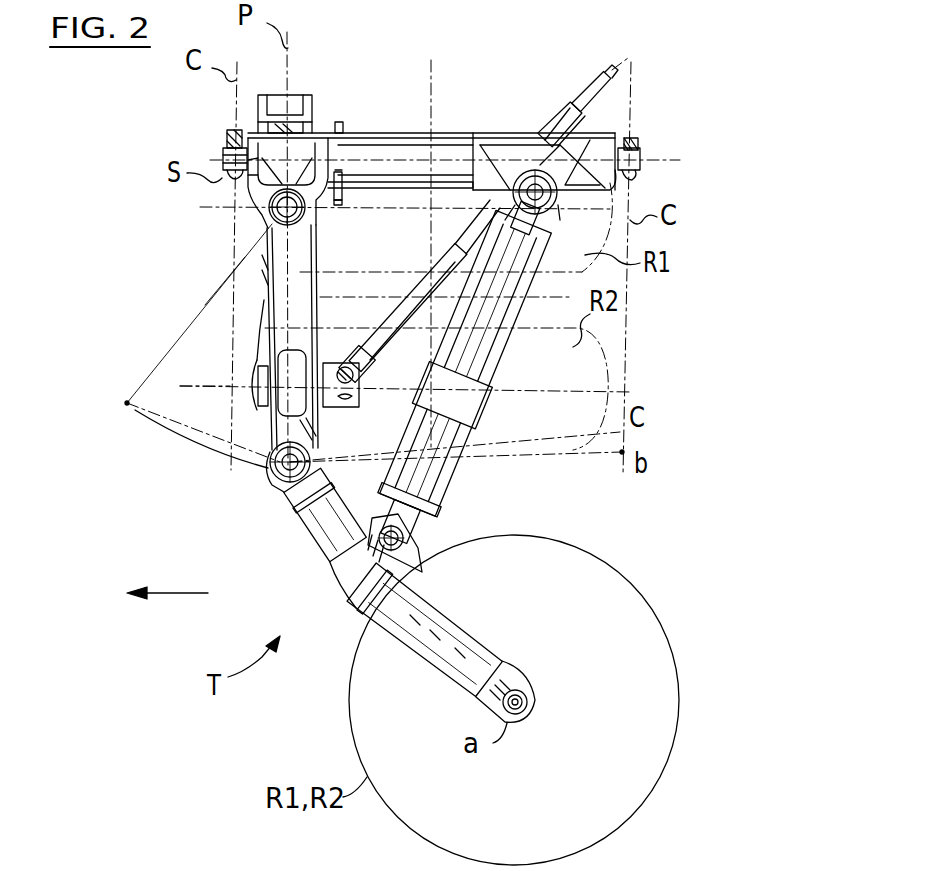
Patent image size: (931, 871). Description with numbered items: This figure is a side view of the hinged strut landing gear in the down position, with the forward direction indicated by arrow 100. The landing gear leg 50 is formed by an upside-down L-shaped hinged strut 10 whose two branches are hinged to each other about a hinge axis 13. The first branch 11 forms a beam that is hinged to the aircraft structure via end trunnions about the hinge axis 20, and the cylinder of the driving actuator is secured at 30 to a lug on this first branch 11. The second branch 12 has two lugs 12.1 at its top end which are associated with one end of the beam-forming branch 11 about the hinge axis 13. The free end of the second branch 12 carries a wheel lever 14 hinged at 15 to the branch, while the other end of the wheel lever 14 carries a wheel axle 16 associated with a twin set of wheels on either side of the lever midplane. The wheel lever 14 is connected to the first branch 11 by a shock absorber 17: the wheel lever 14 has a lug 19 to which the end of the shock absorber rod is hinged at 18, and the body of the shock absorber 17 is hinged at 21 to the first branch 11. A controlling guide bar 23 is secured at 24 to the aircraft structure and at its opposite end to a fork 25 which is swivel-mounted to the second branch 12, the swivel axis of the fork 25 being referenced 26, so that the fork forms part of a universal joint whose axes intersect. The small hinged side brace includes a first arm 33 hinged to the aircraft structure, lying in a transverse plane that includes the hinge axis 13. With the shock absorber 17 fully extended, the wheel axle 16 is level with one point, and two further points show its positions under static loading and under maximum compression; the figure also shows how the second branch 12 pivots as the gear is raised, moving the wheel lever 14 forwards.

The hinged strut 10 is at (386, 141).
The first branch 11 is at (447, 153).
The second branch 12 is at (257, 297).
The lugs 12.1 is at (247, 195).
The hinge axis 13 is at (268, 217).
The wheel lever 14 is at (333, 558).
The hinge axis of wheel lever 15 is at (277, 487).
The wheel axle 16 is at (527, 678).
The shock absorber 17 is at (510, 350).
The shock absorber rod hinge 18 is at (420, 533).
The lug 19 is at (413, 553).
The hinge axis of leg 20 is at (650, 160).
The shock absorber body hinge 21 is at (557, 220).
The controlling guide bar 23 is at (453, 253).
The guide bar attachment 24 is at (603, 83).
The fork 25 is at (333, 407).
The swivel axis 26 is at (207, 387).
The actuator cylinder attachment 30 is at (338, 203).
The first arm 33 is at (317, 98).
The leg 50 is at (214, 266).
The forward direction arrow 100 is at (172, 593).